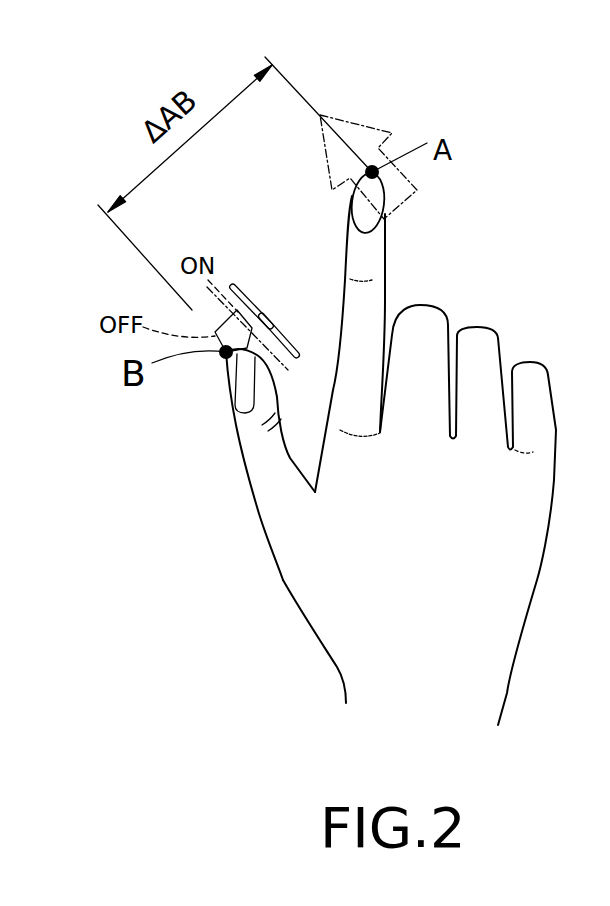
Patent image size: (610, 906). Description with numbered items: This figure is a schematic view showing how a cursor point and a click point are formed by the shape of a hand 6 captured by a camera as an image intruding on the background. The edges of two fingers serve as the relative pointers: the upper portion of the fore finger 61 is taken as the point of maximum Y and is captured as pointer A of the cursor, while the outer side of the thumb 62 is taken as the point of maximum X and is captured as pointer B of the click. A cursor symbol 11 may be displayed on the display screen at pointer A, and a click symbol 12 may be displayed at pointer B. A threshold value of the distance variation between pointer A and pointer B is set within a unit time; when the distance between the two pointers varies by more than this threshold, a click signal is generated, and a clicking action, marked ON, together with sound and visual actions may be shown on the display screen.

The hand 6 is at (437, 320).
The fore finger 61 is at (368, 255).
The thumb 62 is at (260, 462).
The cursor symbol 11 is at (371, 137).
The click symbol 12 is at (254, 308).